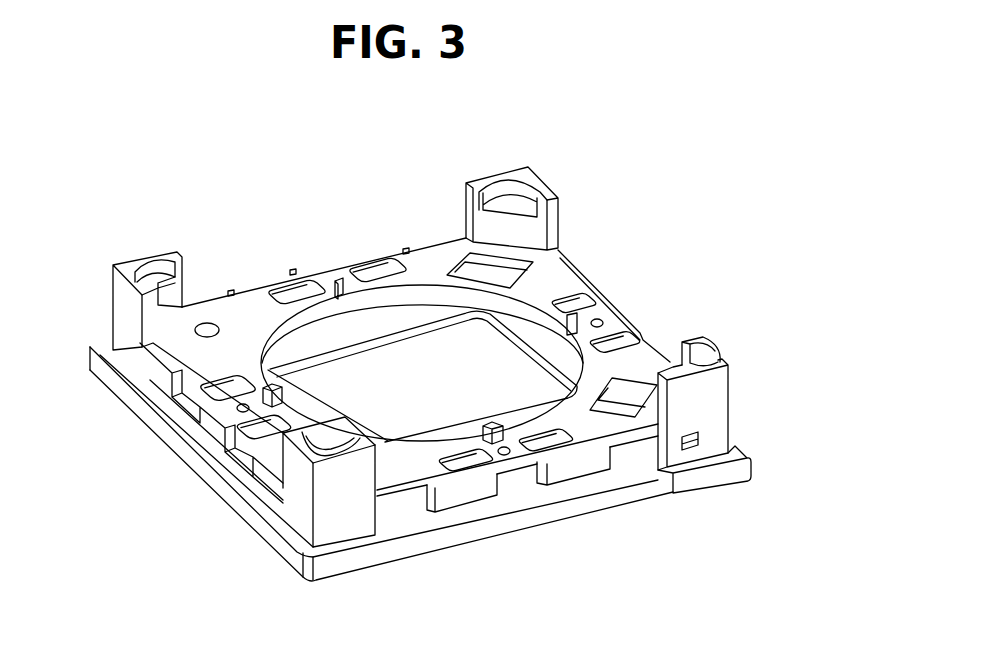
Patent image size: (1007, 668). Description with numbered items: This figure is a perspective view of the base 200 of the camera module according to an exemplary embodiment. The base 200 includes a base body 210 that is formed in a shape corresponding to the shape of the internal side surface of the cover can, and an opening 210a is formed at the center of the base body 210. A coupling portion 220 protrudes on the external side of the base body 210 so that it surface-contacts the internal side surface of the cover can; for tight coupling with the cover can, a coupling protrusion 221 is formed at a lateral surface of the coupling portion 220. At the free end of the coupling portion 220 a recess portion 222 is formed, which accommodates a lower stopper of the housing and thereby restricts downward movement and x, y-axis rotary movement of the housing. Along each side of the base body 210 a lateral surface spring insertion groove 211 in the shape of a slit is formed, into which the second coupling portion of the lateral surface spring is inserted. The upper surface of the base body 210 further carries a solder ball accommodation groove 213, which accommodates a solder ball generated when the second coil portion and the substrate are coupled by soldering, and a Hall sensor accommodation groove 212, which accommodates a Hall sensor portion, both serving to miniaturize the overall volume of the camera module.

The base 200 is at (157, 139).
The base body 210 is at (428, 258).
The opening 210a is at (512, 348).
The lateral surface spring insertion groove 211 is at (180, 400).
The Hall sensor accommodation groove 212 is at (627, 407).
The solder ball accommodation groove 213 is at (545, 448).
The coupling portion 220 is at (727, 402).
The coupling protrusion 221 is at (352, 528).
The recess portion 222 is at (693, 357).